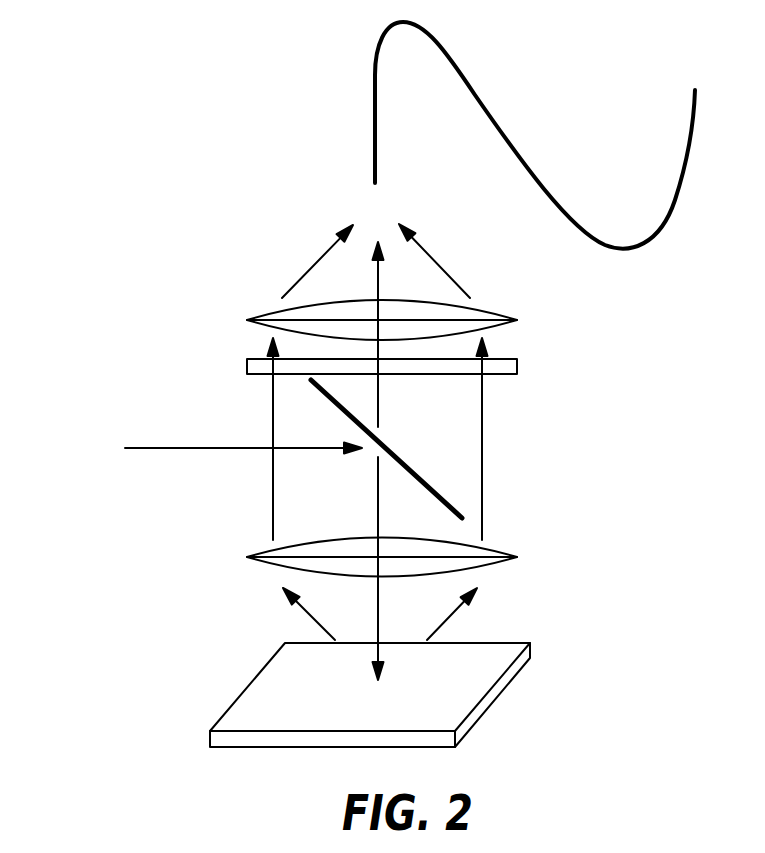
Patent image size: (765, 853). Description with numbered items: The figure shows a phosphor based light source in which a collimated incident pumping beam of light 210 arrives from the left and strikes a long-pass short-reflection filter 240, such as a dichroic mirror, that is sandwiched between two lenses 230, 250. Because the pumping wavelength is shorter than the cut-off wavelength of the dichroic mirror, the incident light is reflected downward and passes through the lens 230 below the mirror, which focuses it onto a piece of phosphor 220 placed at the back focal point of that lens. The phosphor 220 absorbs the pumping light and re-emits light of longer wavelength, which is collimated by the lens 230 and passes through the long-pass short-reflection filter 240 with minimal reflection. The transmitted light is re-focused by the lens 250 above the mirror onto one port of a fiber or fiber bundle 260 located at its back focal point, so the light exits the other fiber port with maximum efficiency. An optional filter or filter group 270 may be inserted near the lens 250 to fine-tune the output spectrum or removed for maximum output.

The collimated incident pumping beam of light 210 is at (155, 447).
The phosphor 220 is at (248, 695).
The lens 230 is at (500, 550).
The long-pass short-reflection filter 240 is at (428, 483).
The lens 250 is at (517, 318).
The fiber or fiber bundle 260 is at (695, 122).
The optional filter or filter group 270 is at (517, 366).